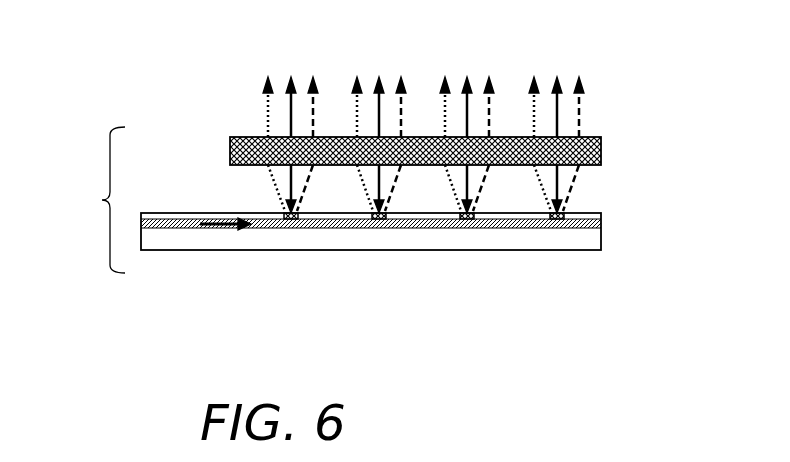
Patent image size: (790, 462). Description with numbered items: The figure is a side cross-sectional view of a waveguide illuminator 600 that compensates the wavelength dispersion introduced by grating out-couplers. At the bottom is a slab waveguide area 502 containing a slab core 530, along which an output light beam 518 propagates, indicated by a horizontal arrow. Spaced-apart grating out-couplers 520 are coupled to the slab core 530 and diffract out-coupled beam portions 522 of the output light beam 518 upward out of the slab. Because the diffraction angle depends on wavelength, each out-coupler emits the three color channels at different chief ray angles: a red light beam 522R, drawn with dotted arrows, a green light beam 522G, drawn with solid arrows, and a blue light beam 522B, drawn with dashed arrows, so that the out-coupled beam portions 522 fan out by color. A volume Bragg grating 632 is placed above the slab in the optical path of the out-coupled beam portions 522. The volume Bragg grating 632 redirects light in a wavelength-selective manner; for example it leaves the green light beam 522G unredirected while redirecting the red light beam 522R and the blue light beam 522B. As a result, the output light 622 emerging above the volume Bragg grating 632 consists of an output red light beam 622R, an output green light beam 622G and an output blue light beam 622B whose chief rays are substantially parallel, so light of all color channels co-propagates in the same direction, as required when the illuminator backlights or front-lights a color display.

The waveguide illuminator 600 is at (102, 200).
The slab waveguide area 502 is at (508, 242).
The slab core 530 is at (184, 226).
The output light beam 518 is at (220, 226).
The grating out-couplers 520 is at (285, 220).
The volume Bragg grating 632 is at (230, 147).
The out-coupled beam portions 522 is at (596, 193).
The red light beam 522R is at (275, 184).
The green light beam 522G is at (381, 172).
The blue light beam 522B is at (305, 176).
The output light 622 is at (617, 101).
The output red light beam 622R is at (443, 110).
The output green light beam 622G is at (291, 110).
The output blue light beam 622B is at (313, 120).